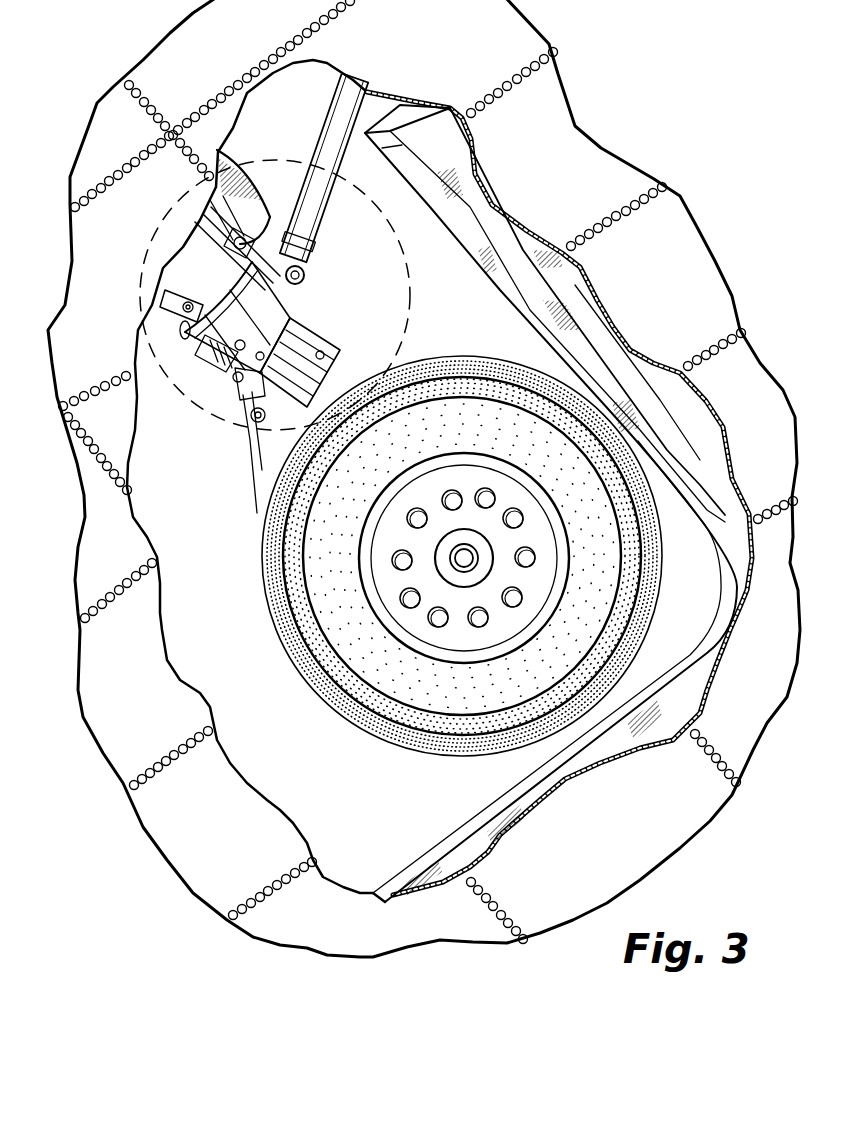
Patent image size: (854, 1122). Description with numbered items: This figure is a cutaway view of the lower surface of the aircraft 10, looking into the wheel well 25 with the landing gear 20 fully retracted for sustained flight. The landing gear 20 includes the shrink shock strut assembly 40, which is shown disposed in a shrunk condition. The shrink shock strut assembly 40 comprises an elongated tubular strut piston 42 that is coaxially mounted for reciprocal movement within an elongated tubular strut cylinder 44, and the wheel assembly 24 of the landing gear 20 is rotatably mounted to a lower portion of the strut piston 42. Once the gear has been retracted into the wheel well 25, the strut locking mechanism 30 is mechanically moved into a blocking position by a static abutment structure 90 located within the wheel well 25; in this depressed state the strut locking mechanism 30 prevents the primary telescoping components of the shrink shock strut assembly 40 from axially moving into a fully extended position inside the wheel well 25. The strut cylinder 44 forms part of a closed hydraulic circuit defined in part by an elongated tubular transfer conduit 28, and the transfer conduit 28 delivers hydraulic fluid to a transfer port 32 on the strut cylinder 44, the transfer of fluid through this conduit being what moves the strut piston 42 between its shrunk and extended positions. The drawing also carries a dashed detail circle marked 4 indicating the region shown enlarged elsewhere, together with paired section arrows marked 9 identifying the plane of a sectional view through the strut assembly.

The aircraft 10 is at (590, 168).
The landing gear 20 is at (233, 293).
The wheel assembly 24 is at (282, 658).
The wheel well 25 is at (508, 797).
The transfer conduit 28 is at (186, 288).
The strut locking mechanism 30 is at (268, 227).
The transfer port 32 is at (300, 315).
The shrink shock strut assembly 40 is at (203, 352).
The strut piston 42 is at (268, 455).
The strut cylinder 44 is at (192, 284).
The static abutment structure 90 is at (252, 197).
The detail view indicator 4 is at (410, 290).
The section view indicator 9 is at (237, 241).